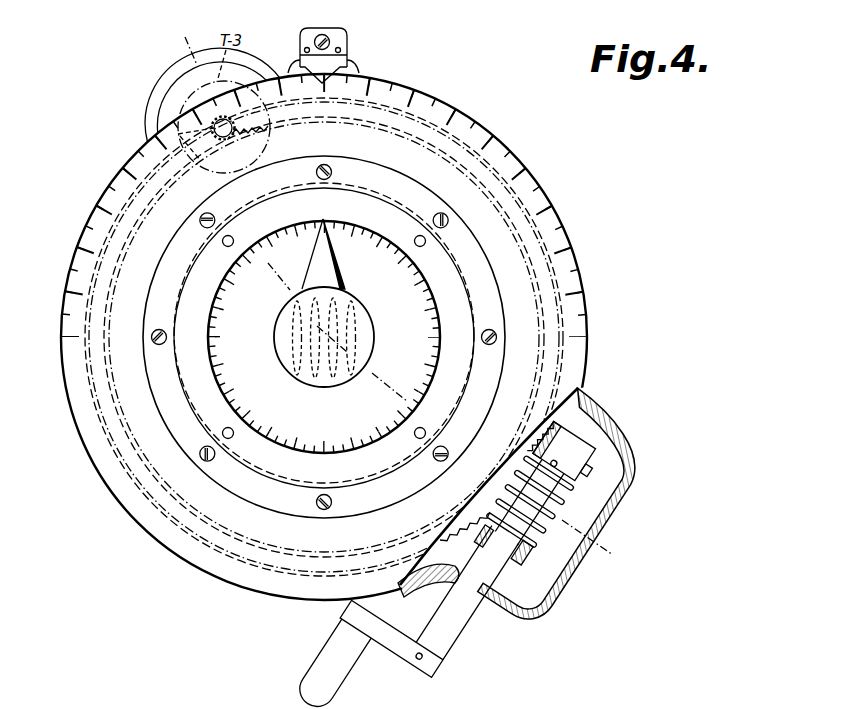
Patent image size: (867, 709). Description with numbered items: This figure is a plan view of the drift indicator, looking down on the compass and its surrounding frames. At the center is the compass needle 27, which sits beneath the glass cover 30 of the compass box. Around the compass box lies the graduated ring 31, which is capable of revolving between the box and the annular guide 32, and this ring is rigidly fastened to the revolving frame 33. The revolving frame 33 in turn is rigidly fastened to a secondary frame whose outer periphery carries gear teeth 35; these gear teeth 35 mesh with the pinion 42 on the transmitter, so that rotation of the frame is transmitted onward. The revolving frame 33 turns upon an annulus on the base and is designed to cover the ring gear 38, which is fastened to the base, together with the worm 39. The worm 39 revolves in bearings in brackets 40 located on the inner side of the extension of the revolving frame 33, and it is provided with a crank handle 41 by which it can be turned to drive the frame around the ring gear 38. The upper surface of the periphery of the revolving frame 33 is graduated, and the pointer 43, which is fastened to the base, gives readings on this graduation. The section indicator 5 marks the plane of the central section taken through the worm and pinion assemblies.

The section line indicator 5 is at (158, 42).
The compass needle 27 is at (372, 336).
The glass cover 30 is at (322, 337).
The graduated ring 31 is at (208, 404).
The annular guide 32 is at (184, 290).
The revolving frame 33 is at (78, 407).
The gear teeth 35 is at (176, 134).
The ring gear 38 is at (453, 542).
The worm 39 is at (529, 503).
The brackets 40 is at (538, 497).
The crank handle 41 is at (367, 654).
The pinion 42 is at (230, 96).
The pointer 43 is at (330, 62).